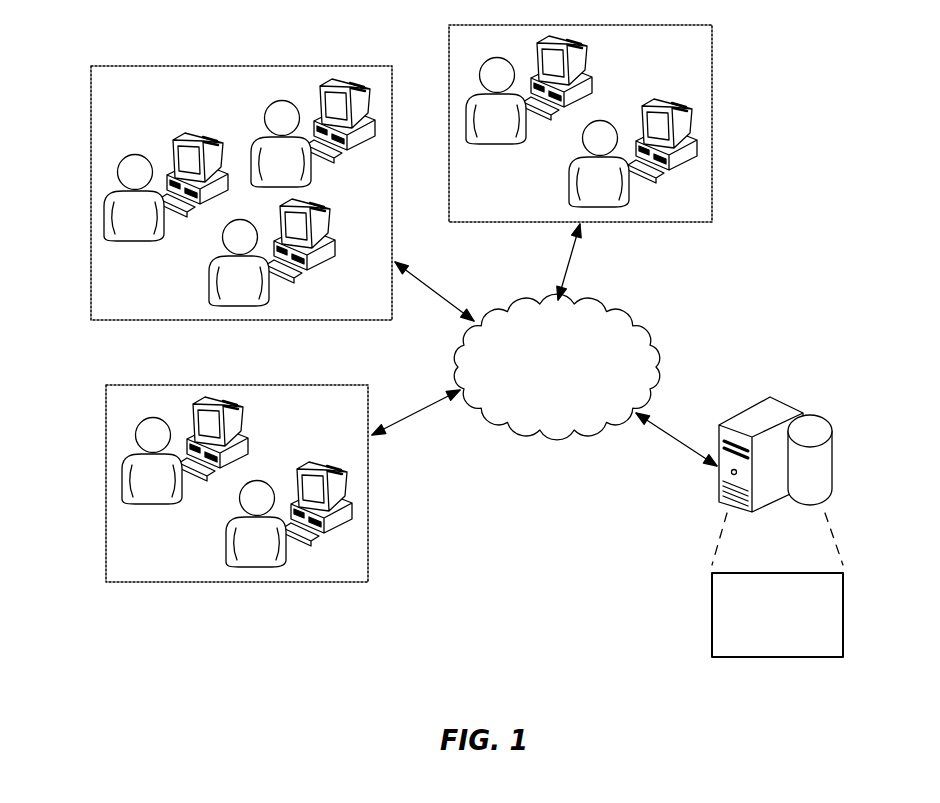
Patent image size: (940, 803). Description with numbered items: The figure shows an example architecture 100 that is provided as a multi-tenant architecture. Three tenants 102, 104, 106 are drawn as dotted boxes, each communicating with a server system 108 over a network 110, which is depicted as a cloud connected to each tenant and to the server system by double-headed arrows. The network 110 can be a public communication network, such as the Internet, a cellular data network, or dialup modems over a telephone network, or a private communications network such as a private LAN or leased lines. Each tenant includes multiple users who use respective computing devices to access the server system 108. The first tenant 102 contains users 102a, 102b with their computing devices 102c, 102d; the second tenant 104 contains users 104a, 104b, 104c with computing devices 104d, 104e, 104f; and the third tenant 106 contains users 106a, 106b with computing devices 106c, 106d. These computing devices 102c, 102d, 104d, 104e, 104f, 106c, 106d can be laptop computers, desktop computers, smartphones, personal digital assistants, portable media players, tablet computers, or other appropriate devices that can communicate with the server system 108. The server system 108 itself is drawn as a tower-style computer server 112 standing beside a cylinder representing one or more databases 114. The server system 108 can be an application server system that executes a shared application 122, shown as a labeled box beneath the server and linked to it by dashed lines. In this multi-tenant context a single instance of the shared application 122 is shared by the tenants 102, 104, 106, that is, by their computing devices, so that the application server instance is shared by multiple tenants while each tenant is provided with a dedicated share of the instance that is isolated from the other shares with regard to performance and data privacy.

The example architecture 100 is at (843, 232).
The tenant 102 is at (106, 484).
The user 102a is at (147, 504).
The user 102b is at (227, 551).
The computing device 102c is at (241, 425).
The computing device 102d is at (302, 463).
The tenant 104 is at (91, 193).
The user 104a is at (128, 154).
The user 104b is at (210, 265).
The user 104c is at (282, 100).
The computing device 104d is at (185, 134).
The computing device 104e is at (315, 202).
The computing device 104f is at (351, 81).
The tenant 106 is at (713, 122).
The user 106a is at (489, 144).
The user 106b is at (569, 193).
The computing device 106c is at (585, 62).
The computing device 106d is at (647, 100).
The server system 108 is at (818, 385).
The network 110 is at (647, 342).
The computer server 112 is at (760, 400).
The database 114 is at (834, 460).
The shared application 122 is at (845, 614).